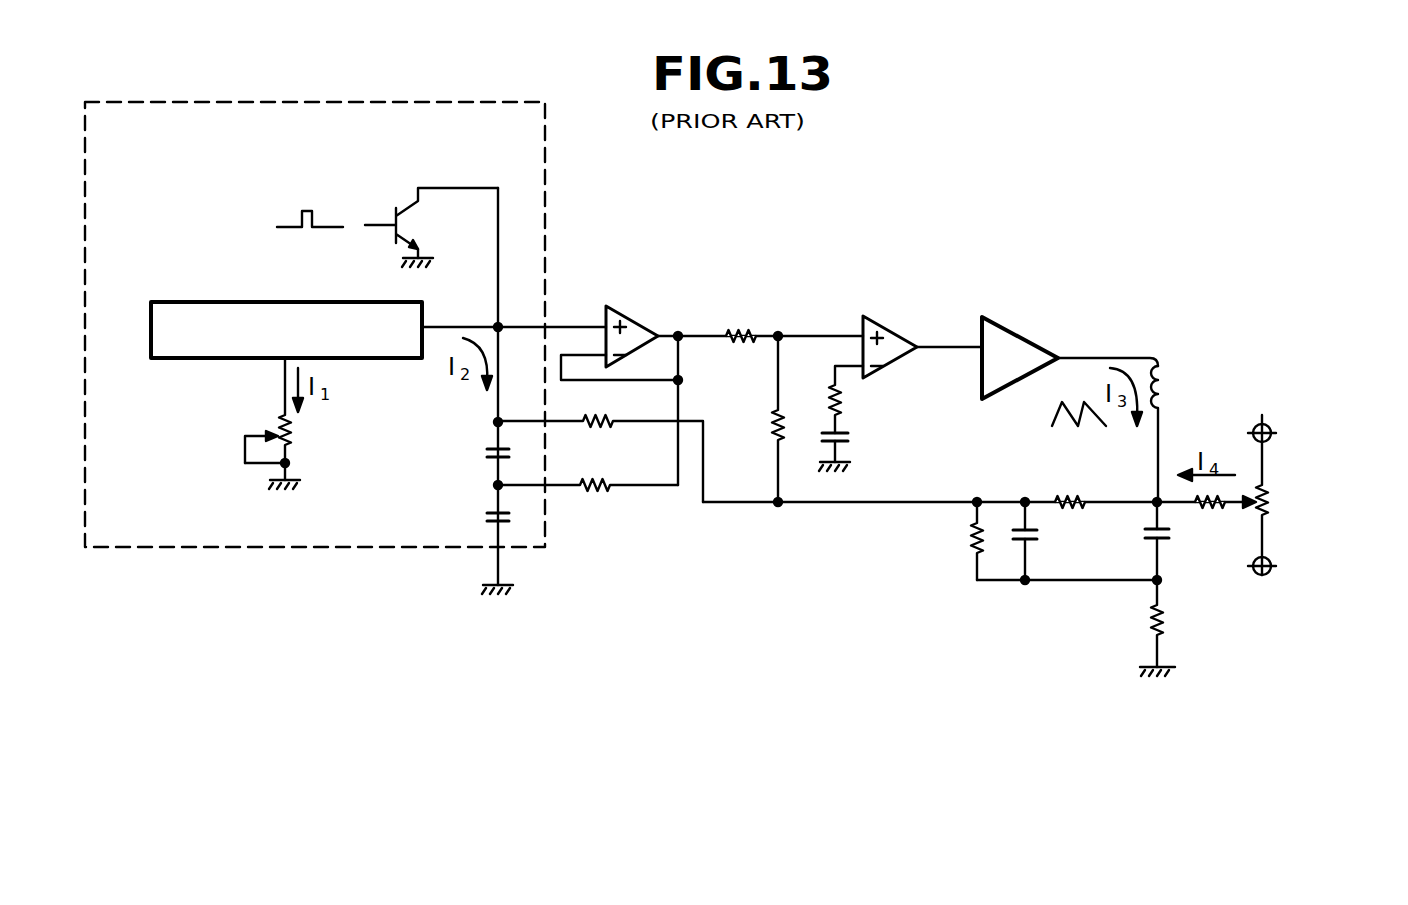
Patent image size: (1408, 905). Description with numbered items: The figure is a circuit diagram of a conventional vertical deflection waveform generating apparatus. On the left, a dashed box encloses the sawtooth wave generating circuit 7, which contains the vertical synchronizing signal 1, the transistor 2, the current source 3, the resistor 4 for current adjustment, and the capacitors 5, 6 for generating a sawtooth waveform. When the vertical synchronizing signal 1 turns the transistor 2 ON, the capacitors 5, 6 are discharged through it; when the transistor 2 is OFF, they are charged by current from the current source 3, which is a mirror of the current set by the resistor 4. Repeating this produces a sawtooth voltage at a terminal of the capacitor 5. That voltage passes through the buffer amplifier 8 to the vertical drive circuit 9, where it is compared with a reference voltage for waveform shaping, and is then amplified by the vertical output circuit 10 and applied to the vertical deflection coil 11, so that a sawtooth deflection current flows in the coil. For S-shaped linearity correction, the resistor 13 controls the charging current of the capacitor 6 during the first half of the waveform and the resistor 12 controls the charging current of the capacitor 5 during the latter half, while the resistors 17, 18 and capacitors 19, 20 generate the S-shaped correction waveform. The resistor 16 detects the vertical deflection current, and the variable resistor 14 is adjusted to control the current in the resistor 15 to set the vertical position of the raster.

The vertical synchronizing signal 1 is at (311, 210).
The transistor 2 is at (397, 200).
The current source 3 is at (150, 331).
The resistor for current adjustment 4 is at (302, 432).
The capacitor 5 is at (488, 450).
The capacitor 6 is at (488, 514).
The sawtooth wave generating circuit 7 is at (229, 100).
The buffer amplifier 8 is at (634, 312).
The vertical drive circuit 9 is at (892, 318).
The vertical output circuit 10 is at (1021, 333).
The vertical deflection coil 11 is at (1167, 372).
The resistor for correcting vertical linearity 12 is at (598, 432).
The resistor for correcting vertical linearity 13 is at (603, 500).
The variable resistor 14 is at (1274, 500).
The resistor for controlling vertical position 15 is at (1206, 506).
The resistor for detecting vertical deflection current 16 is at (1148, 622).
The resistor 17 is at (1072, 493).
The resistor 18 is at (970, 542).
The capacitor 19 is at (1040, 540).
The capacitor 20 is at (1147, 531).